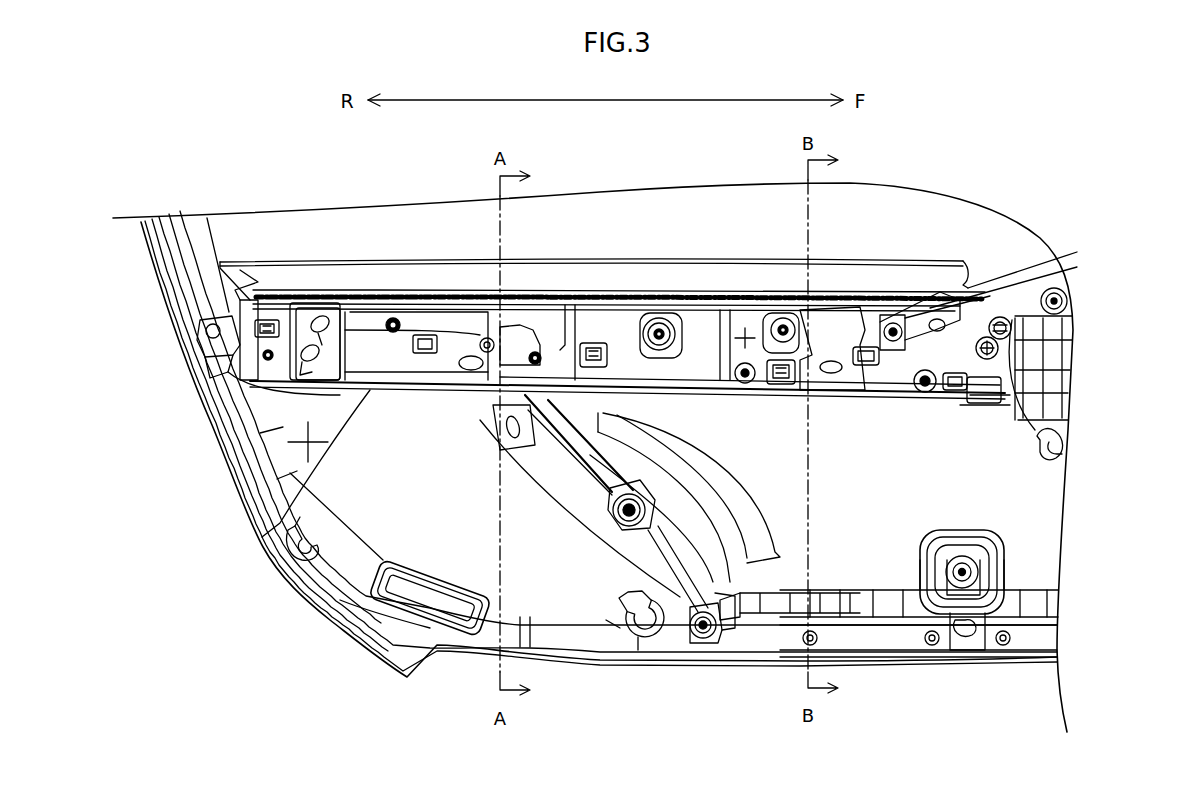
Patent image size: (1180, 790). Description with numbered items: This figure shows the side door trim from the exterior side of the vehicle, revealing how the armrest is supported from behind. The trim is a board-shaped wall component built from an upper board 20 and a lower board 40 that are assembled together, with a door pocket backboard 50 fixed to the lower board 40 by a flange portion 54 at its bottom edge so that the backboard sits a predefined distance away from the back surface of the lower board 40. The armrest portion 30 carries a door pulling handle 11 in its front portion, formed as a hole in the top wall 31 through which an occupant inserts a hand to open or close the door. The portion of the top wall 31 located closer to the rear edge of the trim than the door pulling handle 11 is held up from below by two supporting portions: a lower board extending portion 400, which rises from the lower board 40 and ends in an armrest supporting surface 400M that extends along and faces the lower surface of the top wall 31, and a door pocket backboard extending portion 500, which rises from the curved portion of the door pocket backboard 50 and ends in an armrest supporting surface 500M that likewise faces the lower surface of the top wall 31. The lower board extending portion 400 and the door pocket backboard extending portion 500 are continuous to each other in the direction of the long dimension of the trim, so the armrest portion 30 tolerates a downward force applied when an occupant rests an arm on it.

The door pulling handle 11 is at (1058, 352).
The upper board 20 is at (232, 233).
The armrest portion 30 is at (248, 303).
The top wall 31 is at (450, 296).
The lower board 40 is at (367, 533).
The door pocket backboard 50 is at (885, 555).
The flange portion 54 is at (868, 637).
The lower board extending portion 400 is at (276, 523).
The armrest supporting surface 400M is at (283, 427).
The door pocket backboard extending portion 500 is at (690, 345).
The armrest supporting surface 500M is at (597, 307).